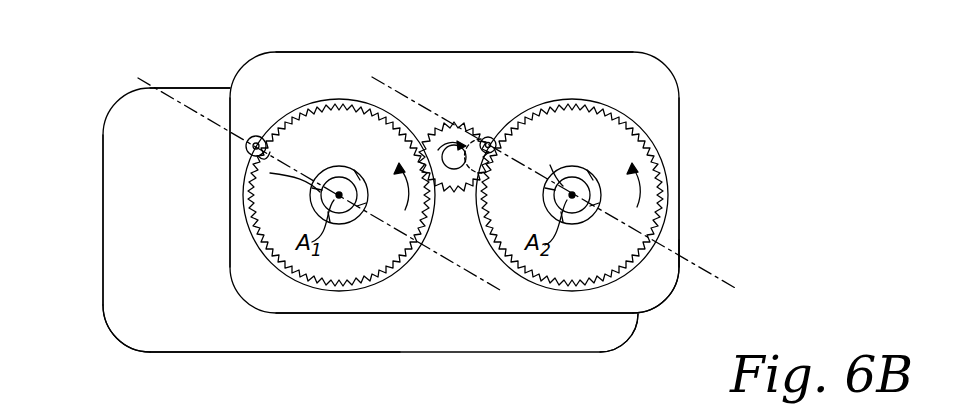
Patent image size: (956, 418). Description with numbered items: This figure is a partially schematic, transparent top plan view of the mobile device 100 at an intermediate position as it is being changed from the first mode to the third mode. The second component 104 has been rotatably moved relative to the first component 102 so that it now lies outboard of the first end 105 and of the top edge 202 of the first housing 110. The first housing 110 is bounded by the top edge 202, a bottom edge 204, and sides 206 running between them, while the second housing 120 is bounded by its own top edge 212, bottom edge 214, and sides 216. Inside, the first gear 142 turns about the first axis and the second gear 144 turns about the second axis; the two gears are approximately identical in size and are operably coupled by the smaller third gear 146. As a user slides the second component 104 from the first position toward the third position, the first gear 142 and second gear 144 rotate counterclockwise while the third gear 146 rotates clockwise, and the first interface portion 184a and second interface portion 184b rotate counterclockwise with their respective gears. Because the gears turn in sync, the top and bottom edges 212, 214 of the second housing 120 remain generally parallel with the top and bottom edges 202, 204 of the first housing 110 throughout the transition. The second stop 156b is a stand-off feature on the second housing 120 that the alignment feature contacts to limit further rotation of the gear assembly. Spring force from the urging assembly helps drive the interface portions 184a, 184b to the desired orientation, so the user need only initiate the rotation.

The mobile device 100 is at (672, 33).
The first component 102 is at (110, 318).
The second component 104 is at (665, 282).
The first end 105 is at (628, 354).
The first housing 110 is at (115, 337).
The second housing 120 is at (680, 272).
The first gear 142 is at (275, 215).
The second gear 144 is at (557, 263).
The third gear 146 is at (448, 122).
The second stop 156b is at (270, 173).
The first interface portion 184a is at (256, 135).
The second interface portion 184b is at (488, 136).
The top edge 202 is at (172, 86).
The bottom edge 204 is at (200, 353).
The sides 206 is at (103, 192).
The top edge 212 is at (320, 51).
The bottom edge 214 is at (437, 315).
The sides 216 is at (230, 253).